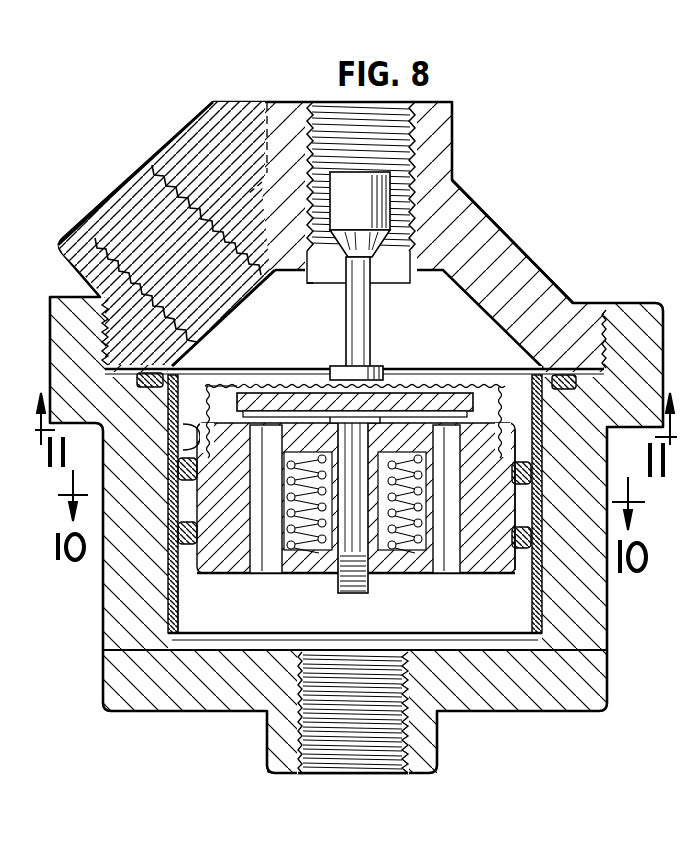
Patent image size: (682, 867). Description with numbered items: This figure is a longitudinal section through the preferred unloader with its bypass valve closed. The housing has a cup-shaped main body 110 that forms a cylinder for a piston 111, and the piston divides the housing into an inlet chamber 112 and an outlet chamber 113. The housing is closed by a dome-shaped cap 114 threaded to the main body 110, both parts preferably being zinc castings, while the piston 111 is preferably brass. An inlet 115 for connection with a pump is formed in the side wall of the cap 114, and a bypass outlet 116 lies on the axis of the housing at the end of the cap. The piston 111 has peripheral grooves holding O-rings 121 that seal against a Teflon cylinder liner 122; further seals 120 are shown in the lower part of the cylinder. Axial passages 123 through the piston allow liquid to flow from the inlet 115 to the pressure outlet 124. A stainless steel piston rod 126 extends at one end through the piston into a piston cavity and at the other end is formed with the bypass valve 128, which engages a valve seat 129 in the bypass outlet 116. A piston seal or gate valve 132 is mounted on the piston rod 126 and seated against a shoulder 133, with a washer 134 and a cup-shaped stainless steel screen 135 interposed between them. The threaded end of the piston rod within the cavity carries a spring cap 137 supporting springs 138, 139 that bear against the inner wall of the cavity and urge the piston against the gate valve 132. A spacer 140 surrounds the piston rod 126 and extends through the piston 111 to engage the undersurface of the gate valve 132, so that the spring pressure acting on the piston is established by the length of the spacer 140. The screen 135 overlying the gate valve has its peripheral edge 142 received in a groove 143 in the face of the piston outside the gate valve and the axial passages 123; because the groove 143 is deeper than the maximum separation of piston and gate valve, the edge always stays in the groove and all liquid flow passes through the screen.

The main body 110 is at (128, 625).
The piston 111 is at (487, 568).
The inlet chamber 112 is at (465, 334).
The outlet chamber 113 is at (485, 625).
The dome-shaped cap 114 is at (470, 220).
The inlet 115 is at (120, 214).
The bypass outlet 116 is at (322, 104).
The O-ring seal 120 is at (210, 522).
The O-rings 121 is at (512, 535).
The cylinder liner 122 is at (187, 620).
The axial passages 123 is at (262, 573).
The pressure outlet 124 is at (375, 767).
The piston rod 126 is at (372, 306).
The bypass valve 128 is at (347, 190).
The valve seat 129 is at (312, 285).
The gate valve 132 is at (468, 396).
The shoulder 133 is at (336, 364).
The washer 134 is at (417, 390).
The cup-shaped screen 135 is at (235, 382).
The spring cap 137 is at (380, 575).
The spring 138 is at (312, 575).
The spring 139 is at (402, 577).
The spacer 140 is at (383, 412).
The peripheral edge 142 is at (210, 384).
The groove 143 is at (176, 421).